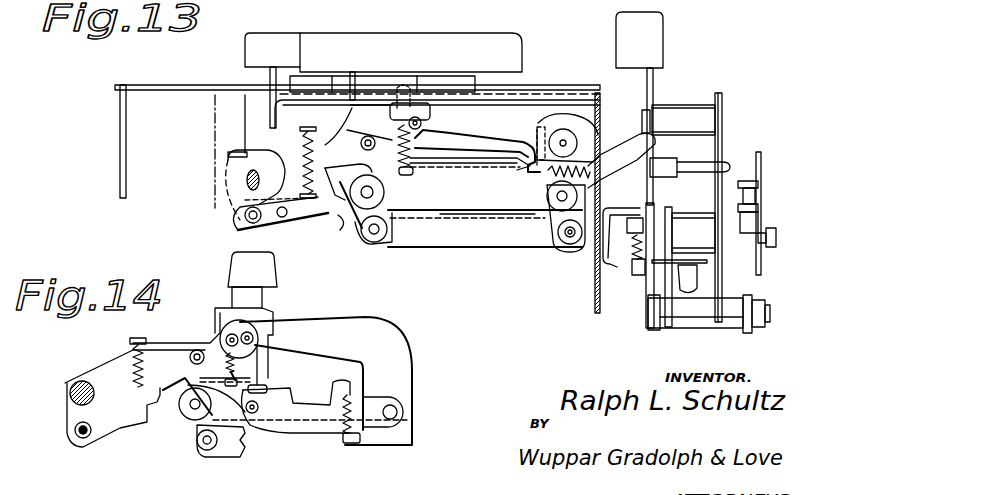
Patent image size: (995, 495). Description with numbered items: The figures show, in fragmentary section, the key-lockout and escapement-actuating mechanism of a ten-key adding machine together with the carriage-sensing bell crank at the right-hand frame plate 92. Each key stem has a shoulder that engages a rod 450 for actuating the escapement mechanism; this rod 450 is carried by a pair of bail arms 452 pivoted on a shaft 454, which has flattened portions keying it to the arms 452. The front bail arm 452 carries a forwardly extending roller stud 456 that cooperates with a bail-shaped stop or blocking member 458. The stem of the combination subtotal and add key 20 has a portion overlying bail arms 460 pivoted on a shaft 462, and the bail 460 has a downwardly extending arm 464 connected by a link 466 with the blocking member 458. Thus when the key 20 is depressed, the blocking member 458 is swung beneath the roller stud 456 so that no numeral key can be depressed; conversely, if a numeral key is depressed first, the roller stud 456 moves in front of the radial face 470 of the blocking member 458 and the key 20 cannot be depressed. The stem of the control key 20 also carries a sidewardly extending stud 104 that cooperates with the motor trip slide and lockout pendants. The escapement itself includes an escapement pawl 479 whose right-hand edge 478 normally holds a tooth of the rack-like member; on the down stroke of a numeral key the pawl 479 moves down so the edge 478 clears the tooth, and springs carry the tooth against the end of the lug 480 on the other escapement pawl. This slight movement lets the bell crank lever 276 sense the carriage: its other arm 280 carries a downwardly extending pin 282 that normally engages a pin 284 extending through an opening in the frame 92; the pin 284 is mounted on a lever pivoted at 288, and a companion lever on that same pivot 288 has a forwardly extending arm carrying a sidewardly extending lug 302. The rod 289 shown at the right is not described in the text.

In FIG. 13, the combination subtotal and add key 20 is at (660, 24).
In FIG. 13, the right-hand frame plate 92 is at (717, 95).
In FIG. 13, the sidewardly extending stud 104 is at (728, 165).
In FIG. 13, the bell crank lever 276 is at (606, 208).
In FIG. 13, the other arm of the bell crank 280 is at (620, 268).
In FIG. 13, the downwardly extending pin 282 is at (692, 296).
In FIG. 13, the pin 284 is at (727, 278).
In FIG. 13, the pivot 288 is at (777, 247).
In FIG. 13, the rod 289 is at (758, 160).
In FIG. 13, the sidewardly extending lug 302 is at (760, 213).
In FIG. 13, the rod 450 is at (421, 124).
In FIG. 14, the rod 450 is at (215, 333).
In FIG. 14, the bail arms 452 is at (162, 350).
In FIG. 13, the shaft 454 is at (245, 178).
In FIG. 14, the shaft 454 is at (72, 383).
In FIG. 13, the roller stud 456 is at (362, 147).
In FIG. 14, the roller stud 456 is at (190, 360).
In FIG. 13, the blocking member 458 is at (378, 244).
In FIG. 14, the blocking member 458 is at (172, 400).
In FIG. 13, the bail arms 460 is at (300, 165).
In FIG. 13, the shaft 462 is at (548, 124).
In FIG. 13, the downwardly extending arm 464 is at (557, 246).
In FIG. 13, the link 466 is at (460, 237).
In FIG. 14, the link 466 is at (227, 457).
In FIG. 13, the radial face 470 is at (374, 196).
In FIG. 14, the radial face 470 is at (243, 418).
In FIG. 13, the right-hand edge of the escapement pawl 478 is at (338, 230).
In FIG. 13, the escapement pawl 479 is at (290, 222).
In FIG. 14, the lug 480 is at (118, 433).